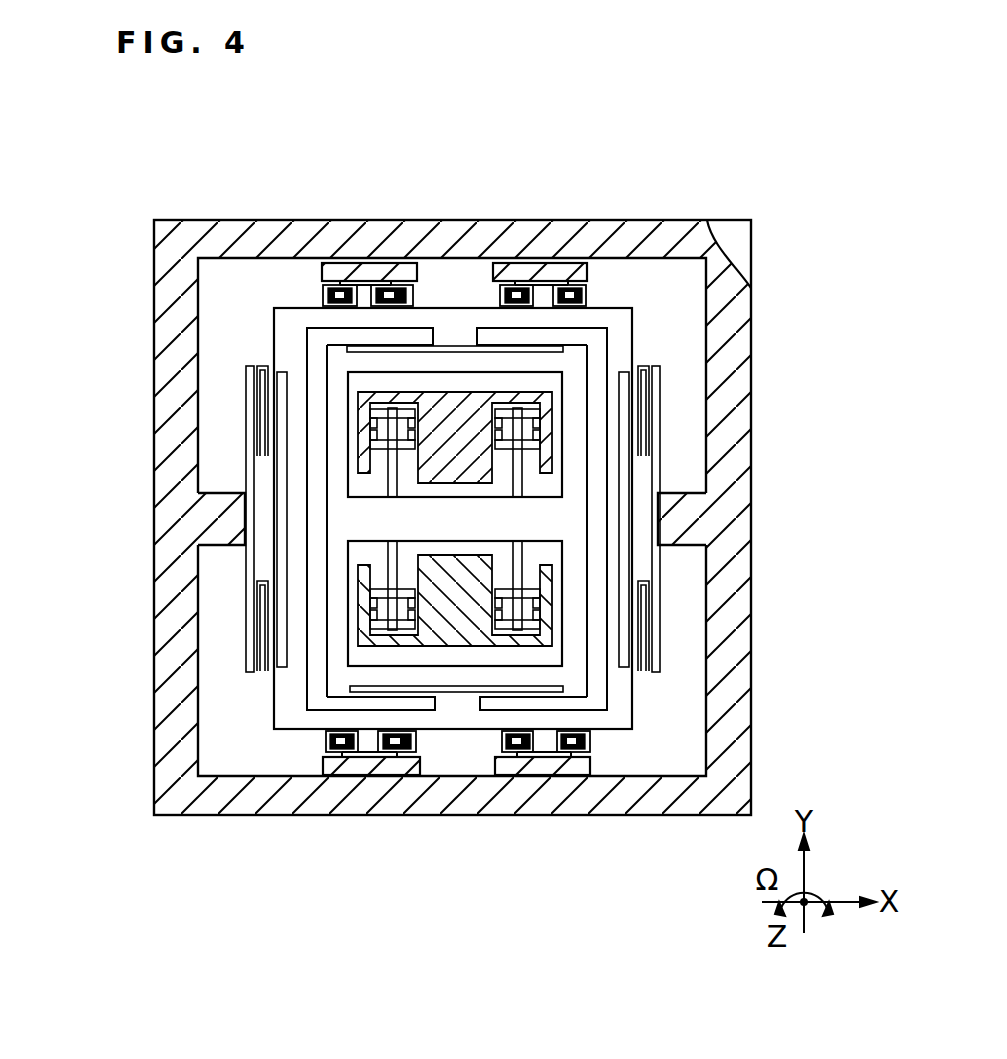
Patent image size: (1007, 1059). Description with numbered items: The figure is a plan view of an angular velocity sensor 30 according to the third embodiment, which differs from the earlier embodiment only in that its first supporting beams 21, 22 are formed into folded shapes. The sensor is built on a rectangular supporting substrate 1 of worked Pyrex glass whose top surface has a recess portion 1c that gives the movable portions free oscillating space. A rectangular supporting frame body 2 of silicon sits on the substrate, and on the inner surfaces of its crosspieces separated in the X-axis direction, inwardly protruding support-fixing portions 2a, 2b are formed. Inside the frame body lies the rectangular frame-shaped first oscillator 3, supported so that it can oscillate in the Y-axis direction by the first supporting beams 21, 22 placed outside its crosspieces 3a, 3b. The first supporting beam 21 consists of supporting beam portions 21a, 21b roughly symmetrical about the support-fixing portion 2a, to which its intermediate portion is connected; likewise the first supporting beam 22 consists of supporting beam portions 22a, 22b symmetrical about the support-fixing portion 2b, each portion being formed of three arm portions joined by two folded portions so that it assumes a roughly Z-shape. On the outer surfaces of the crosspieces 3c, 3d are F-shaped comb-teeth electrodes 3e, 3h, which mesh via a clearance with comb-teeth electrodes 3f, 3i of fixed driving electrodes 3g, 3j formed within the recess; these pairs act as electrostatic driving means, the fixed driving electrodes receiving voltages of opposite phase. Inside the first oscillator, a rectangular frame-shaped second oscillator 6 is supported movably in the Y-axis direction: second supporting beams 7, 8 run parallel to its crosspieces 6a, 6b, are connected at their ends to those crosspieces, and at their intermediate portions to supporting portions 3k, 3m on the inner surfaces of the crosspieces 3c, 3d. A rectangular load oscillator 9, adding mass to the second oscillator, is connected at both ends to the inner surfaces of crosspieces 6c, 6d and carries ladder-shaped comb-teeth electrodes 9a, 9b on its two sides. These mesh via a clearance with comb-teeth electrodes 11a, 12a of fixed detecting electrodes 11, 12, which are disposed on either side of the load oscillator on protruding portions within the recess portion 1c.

The supporting substrate 1 is at (743, 252).
The recess portion 1c is at (690, 724).
The supporting frame body 2 is at (720, 292).
The support-fixing portion 2a is at (228, 528).
The support-fixing portion 2b is at (683, 517).
The first oscillator 3 is at (637, 302).
The crosspiece 3a is at (283, 688).
The crosspiece 3b is at (617, 685).
The crosspiece 3c is at (490, 307).
The crosspiece 3d is at (481, 705).
The comb-teeth electrode 3e is at (333, 287).
The comb-teeth electrode 3f is at (343, 285).
The fixed driving electrode 3g is at (360, 287).
The comb-teeth electrode 3h is at (587, 292).
The comb-teeth electrode 3i is at (555, 283).
The fixed driving electrode 3j is at (578, 283).
The supporting portion 3k is at (455, 330).
The supporting portion 3m is at (453, 705).
The second oscillator 6 is at (335, 365).
The crosspiece 6a is at (376, 355).
The crosspiece 6b is at (598, 712).
The crosspiece 6c is at (333, 370).
The crosspiece 6d is at (575, 435).
The second supporting beam 7 is at (427, 335).
The second supporting beam 8 is at (427, 705).
The load oscillator 9 is at (400, 522).
The comb-teeth electrode 9a is at (390, 442).
The comb-teeth electrode 9b is at (388, 600).
The fixed detecting electrode 11 is at (455, 413).
The comb-teeth electrode 11a is at (363, 415).
The fixed detecting electrode 12 is at (440, 620).
The comb-teeth electrode 12a is at (372, 578).
The first supporting beam 21 is at (246, 672).
The supporting beam portion 21a is at (262, 455).
The supporting beam portion 21b is at (265, 615).
The first supporting beam 22 is at (637, 648).
The supporting beam portion 22a is at (658, 452).
The supporting beam portion 22b is at (655, 607).
The angular velocity sensor 30 is at (733, 220).